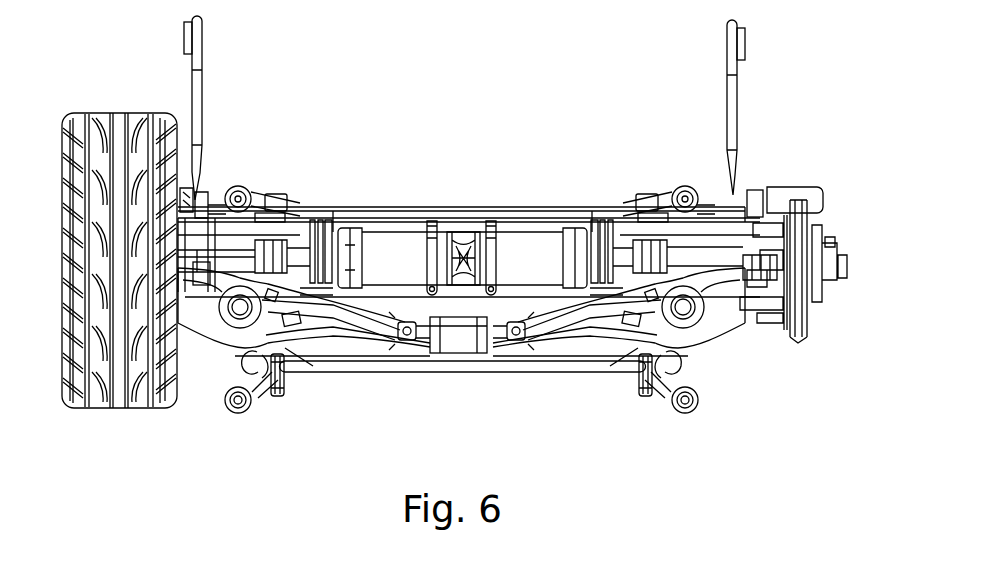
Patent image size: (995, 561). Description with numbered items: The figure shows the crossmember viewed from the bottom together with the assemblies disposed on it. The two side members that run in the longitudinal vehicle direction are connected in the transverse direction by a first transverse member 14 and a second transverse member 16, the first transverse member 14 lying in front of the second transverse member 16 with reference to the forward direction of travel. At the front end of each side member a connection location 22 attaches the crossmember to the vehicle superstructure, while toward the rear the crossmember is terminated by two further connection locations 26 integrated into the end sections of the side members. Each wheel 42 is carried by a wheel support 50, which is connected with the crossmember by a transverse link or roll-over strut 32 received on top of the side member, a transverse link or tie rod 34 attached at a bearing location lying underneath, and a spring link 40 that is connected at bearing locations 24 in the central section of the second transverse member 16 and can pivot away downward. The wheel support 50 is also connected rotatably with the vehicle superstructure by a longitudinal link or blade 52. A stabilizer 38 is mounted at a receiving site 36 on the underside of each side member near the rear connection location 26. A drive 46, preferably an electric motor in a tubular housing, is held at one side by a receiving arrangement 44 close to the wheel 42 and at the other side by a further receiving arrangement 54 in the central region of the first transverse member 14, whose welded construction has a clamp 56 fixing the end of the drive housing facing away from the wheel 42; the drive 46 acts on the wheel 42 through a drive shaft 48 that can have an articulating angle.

The first transverse member 14 is at (350, 220).
The second transverse member 16 is at (452, 347).
The connection location 22 is at (233, 192).
The bearing location 24 is at (413, 355).
The connection location 26 is at (238, 413).
The transverse link or roll-over strut 32 is at (270, 200).
The transverse link or tie rod 34 is at (217, 223).
The receiving site 36 is at (278, 396).
The stabilizer 38 is at (340, 372).
The spring link 40 is at (220, 350).
The wheel 42 is at (82, 113).
The receiving arrangement 44 is at (305, 212).
The drive 46 is at (410, 250).
The drive shaft 48 is at (200, 200).
The wheel support 50 is at (797, 290).
The longitudinal link or blade 52 is at (205, 38).
The further receiving arrangement 54 is at (460, 227).
The clamp 56 is at (424, 207).